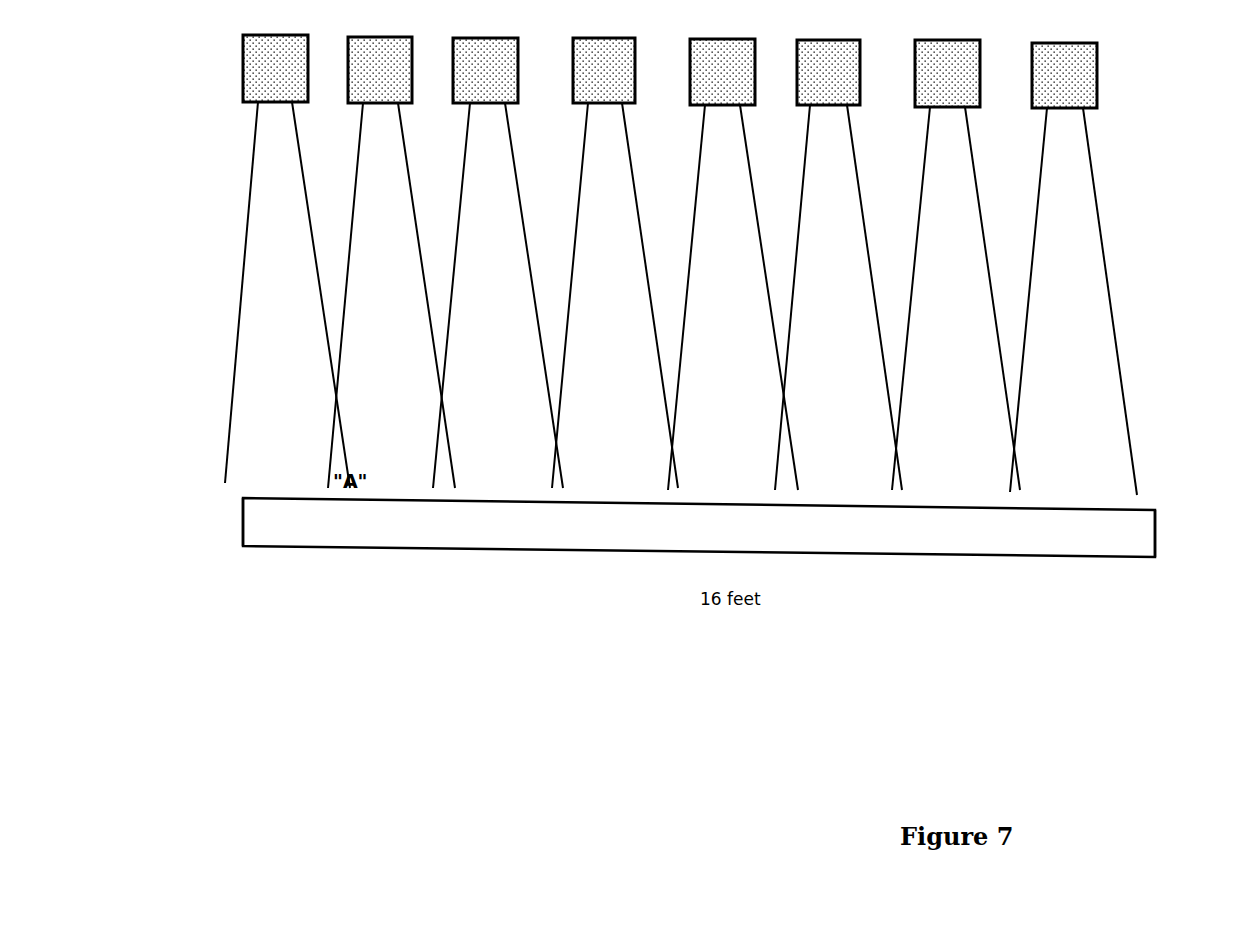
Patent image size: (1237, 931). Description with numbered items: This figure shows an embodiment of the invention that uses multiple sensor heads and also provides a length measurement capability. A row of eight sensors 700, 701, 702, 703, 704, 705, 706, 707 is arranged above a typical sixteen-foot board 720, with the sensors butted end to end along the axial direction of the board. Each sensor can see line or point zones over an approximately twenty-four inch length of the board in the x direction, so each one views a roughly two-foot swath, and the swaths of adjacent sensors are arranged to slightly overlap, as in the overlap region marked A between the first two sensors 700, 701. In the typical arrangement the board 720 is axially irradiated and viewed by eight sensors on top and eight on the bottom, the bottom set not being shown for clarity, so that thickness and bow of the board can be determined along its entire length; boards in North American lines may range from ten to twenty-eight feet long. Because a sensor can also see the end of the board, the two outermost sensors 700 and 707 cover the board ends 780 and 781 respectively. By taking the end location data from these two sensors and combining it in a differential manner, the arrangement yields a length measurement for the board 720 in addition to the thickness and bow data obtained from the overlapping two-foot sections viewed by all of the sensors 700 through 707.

The sensor 700 is at (287, 261).
The sensor 701 is at (391, 262).
The sensor 702 is at (498, 263).
The sensor 703 is at (615, 263).
The sensor 704 is at (733, 264).
The sensor 705 is at (838, 265).
The sensor 706 is at (956, 265).
The sensor 707 is at (1073, 269).
The board 720 is at (699, 527).
The board end 780 is at (213, 522).
The board end 781 is at (1188, 533).